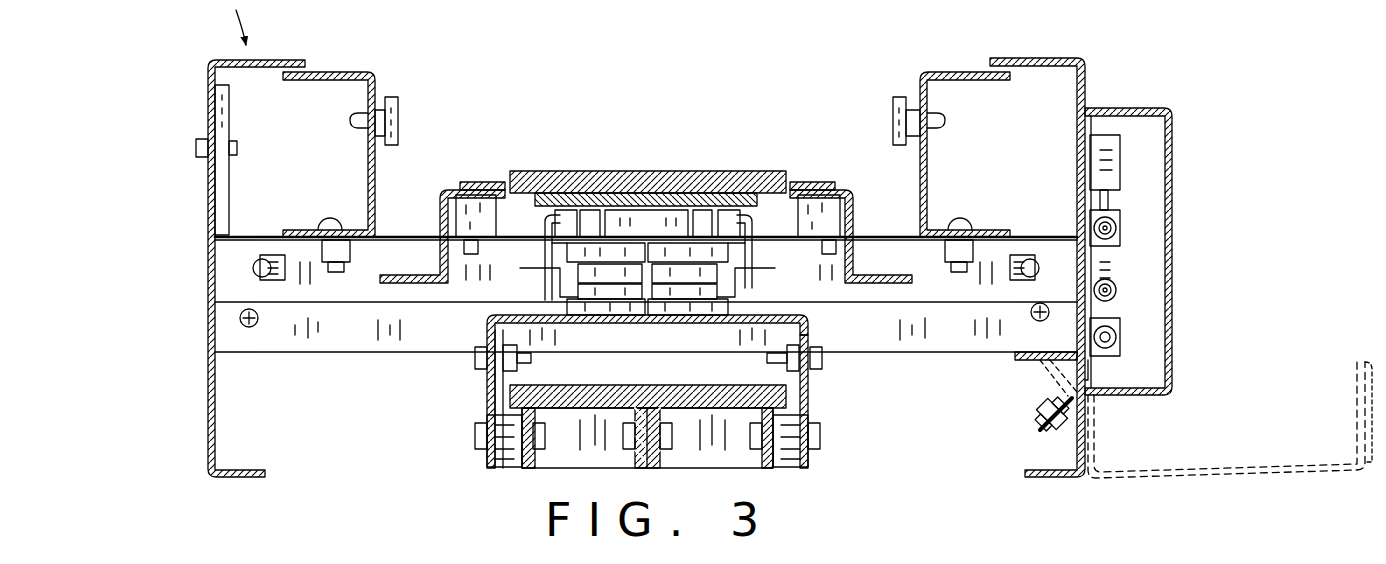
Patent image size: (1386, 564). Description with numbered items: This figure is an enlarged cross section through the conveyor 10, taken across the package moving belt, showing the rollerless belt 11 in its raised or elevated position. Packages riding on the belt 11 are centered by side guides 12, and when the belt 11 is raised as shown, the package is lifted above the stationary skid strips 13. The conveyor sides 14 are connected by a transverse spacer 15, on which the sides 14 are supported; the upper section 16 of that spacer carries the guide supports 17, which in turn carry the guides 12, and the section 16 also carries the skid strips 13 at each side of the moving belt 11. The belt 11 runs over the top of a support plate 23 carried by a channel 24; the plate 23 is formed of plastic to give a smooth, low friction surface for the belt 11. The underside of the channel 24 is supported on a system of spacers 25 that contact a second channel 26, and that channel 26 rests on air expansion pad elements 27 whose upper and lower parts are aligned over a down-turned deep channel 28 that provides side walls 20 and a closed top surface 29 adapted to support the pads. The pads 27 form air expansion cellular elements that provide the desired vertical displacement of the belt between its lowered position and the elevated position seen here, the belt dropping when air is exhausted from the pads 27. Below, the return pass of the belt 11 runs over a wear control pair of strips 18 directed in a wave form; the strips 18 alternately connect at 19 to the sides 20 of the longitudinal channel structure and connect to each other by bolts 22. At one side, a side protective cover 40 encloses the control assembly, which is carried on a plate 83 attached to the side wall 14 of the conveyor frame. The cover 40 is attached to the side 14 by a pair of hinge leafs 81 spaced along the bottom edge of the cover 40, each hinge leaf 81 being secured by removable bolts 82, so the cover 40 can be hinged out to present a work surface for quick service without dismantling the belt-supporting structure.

The conveyor 10 is at (810, 52).
The rollerless belt 11 is at (604, 170).
The side guides 12 is at (402, 118).
The stationary skid strips 13 is at (478, 180).
The conveyor sides 14 is at (1050, 48).
The transverse spacer 15 is at (258, 340).
The upper section 16 is at (232, 278).
The guide supports 17 is at (336, 70).
The wear control strips 18 is at (670, 473).
The connection 19 is at (475, 441).
The side walls 20 is at (810, 400).
The bolts 22 is at (674, 440).
The support plate 23 is at (665, 192).
The channel 24 is at (545, 222).
The spacers 25 is at (705, 222).
The second channel 26 is at (752, 258).
The air expansion pad elements 27 is at (568, 283).
The down-turned deep channel 28 is at (474, 390).
The closed top surface 29 is at (705, 322).
The side protective cover 40 is at (1173, 221).
The hinge leafs 81 is at (1040, 425).
The removable bolts 82 is at (1040, 410).
The plate 83 is at (1088, 372).